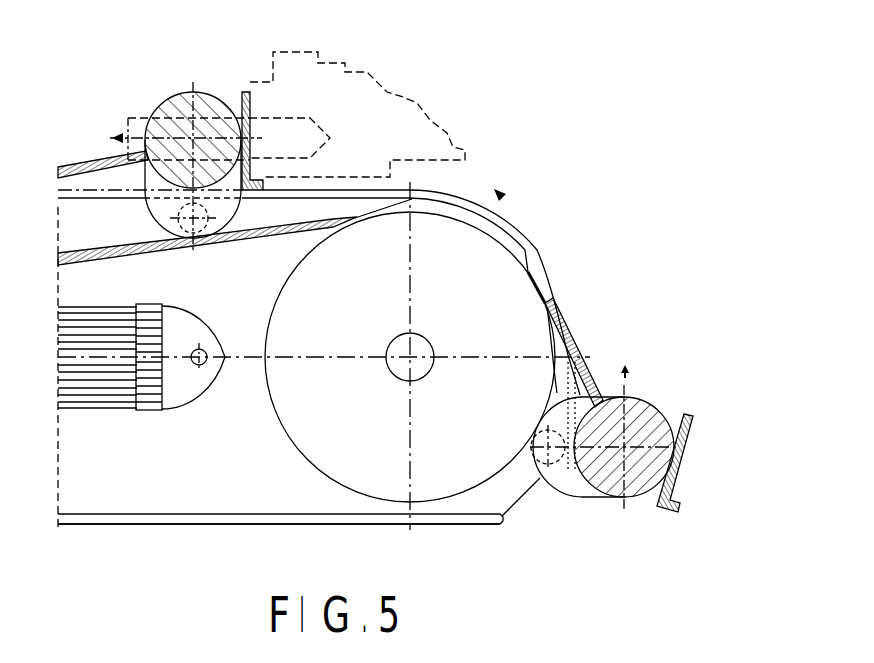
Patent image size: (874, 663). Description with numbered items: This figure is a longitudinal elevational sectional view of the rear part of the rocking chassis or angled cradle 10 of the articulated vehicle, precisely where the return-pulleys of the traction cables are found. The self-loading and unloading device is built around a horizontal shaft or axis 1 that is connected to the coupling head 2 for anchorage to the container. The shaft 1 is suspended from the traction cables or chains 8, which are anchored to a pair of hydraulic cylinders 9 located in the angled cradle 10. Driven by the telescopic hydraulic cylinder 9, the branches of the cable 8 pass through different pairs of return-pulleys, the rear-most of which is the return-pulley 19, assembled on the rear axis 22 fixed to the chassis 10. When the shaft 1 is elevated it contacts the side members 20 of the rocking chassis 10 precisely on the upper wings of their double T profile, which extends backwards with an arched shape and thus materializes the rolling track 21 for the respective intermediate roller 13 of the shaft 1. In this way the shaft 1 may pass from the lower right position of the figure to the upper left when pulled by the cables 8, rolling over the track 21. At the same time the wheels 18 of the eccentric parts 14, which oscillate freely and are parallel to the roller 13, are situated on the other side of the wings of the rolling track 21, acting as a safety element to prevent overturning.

The horizontal shaft or axis 1 is at (667, 396).
The coupling head 2 is at (692, 417).
The traction cables or chains 8 is at (584, 377).
The hydraulic cylinders 9 is at (103, 414).
The angled cradle or rocking chassis 10 is at (239, 527).
The roller 13 is at (175, 98).
The eccentric adjacent part 14 is at (578, 497).
The wheels 18 is at (543, 478).
The return-pulleys 19 is at (470, 252).
The side members 20 is at (208, 485).
The rolling track 21 is at (452, 200).
The rear axis 22 is at (428, 340).